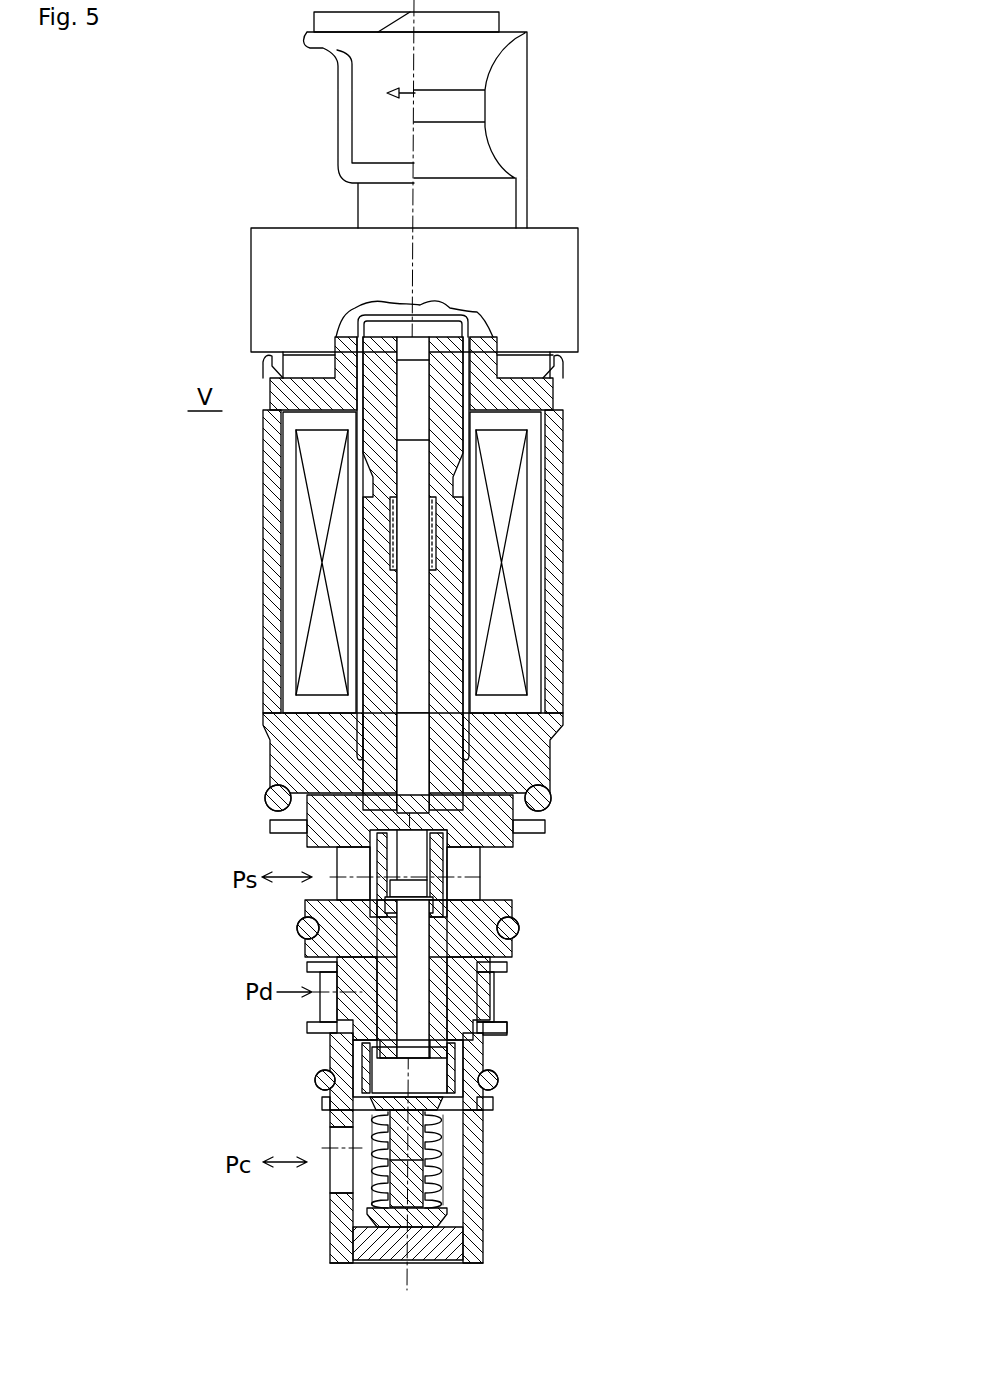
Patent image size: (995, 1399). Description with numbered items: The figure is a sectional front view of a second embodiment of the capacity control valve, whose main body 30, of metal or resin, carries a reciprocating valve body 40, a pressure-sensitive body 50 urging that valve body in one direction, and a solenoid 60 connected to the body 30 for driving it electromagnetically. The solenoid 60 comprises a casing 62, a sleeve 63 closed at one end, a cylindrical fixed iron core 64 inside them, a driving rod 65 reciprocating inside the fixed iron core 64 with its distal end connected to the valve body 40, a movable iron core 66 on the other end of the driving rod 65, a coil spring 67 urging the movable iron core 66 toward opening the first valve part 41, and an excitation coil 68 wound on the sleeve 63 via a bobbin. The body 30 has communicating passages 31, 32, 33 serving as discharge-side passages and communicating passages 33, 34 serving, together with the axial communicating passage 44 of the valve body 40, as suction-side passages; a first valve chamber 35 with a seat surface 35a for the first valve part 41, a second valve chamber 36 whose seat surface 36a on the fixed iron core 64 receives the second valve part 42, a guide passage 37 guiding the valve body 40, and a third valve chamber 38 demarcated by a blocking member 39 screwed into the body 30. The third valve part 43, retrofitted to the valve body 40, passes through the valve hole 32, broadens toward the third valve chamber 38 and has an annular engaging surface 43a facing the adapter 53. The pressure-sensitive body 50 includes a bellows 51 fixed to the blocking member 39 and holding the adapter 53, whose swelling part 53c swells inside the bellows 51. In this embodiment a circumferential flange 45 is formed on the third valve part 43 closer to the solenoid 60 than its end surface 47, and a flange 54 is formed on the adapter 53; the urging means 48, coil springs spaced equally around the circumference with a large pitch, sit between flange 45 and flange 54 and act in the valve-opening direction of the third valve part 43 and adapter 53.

The body 30 is at (512, 907).
The communicating passage 31 is at (340, 997).
The communicating passage 32 is at (345, 1020).
The communicating passage 33 is at (338, 1130).
The communicating passage 34 is at (337, 905).
The first valve chamber 35 is at (323, 982).
The seat surface 35a is at (378, 1012).
The second valve chamber 36 is at (370, 870).
The seat surface 36a is at (455, 850).
The guide passage 37 is at (490, 975).
The third valve chamber 38 is at (353, 1178).
The blocking member 39 is at (423, 1250).
The valve body 40 is at (513, 945).
The first valve part 41 is at (460, 1040).
The second valve part 42 is at (483, 877).
The third valve part 43 is at (485, 1042).
The engaging surface 43a is at (470, 1075).
The communicating passage 44 is at (465, 985).
The flange 45 is at (450, 1040).
The end surface 47 is at (372, 1094).
The urging means 48 is at (480, 1090).
The pressure-sensitive body 50 is at (440, 1220).
The bellows 51 is at (355, 1187).
The adapter 53 is at (445, 1140).
The swelling part 53c is at (423, 1153).
The flange 54 is at (457, 1097).
The solenoid 60 is at (263, 558).
The casing 62 is at (548, 772).
The sleeve 63 is at (450, 340).
The fixed iron core 64 is at (445, 720).
The driving rod 65 is at (417, 607).
The movable iron core 66 is at (453, 378).
The coil spring 67 is at (437, 547).
The excitation coil 68 is at (507, 633).